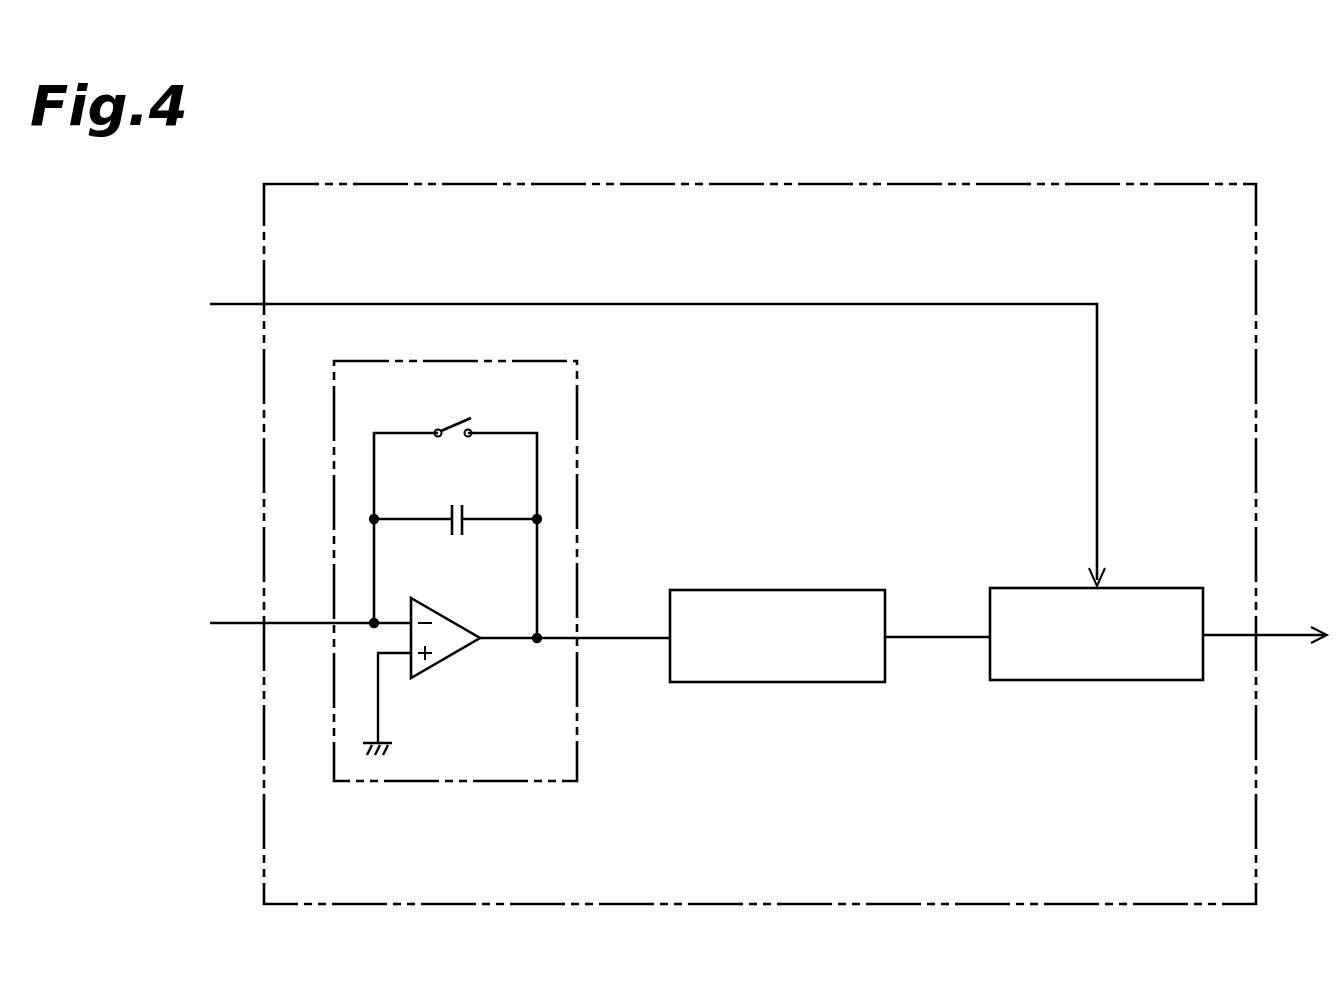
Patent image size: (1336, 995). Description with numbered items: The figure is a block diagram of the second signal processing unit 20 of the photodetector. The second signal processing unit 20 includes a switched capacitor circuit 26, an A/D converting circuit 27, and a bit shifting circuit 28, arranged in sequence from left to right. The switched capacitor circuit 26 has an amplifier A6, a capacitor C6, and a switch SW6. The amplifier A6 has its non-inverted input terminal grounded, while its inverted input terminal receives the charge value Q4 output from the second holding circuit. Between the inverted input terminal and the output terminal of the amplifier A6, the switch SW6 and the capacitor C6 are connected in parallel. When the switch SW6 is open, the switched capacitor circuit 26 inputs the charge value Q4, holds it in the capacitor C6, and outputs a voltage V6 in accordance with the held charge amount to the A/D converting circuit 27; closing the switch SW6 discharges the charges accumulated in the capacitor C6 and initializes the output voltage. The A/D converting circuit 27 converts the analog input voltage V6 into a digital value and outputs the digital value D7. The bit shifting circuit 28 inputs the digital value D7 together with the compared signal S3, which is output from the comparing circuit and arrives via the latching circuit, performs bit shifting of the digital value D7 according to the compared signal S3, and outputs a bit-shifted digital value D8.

The second signal processing unit 20 is at (1114, 184).
The switched capacitor circuit 26 is at (455, 611).
The A/D converting circuit 27 is at (775, 683).
The bit shifting circuit 28 is at (1097, 682).
The switch SW6 is at (456, 426).
The capacitor C6 is at (464, 526).
The amplifier A6 is at (462, 655).
The compared signal S3 is at (197, 296).
The charge value Q4 is at (197, 615).
The voltage V6 is at (603, 620).
The digital value D7 is at (937, 619).
The bit-shifted digital value D8 is at (1265, 620).